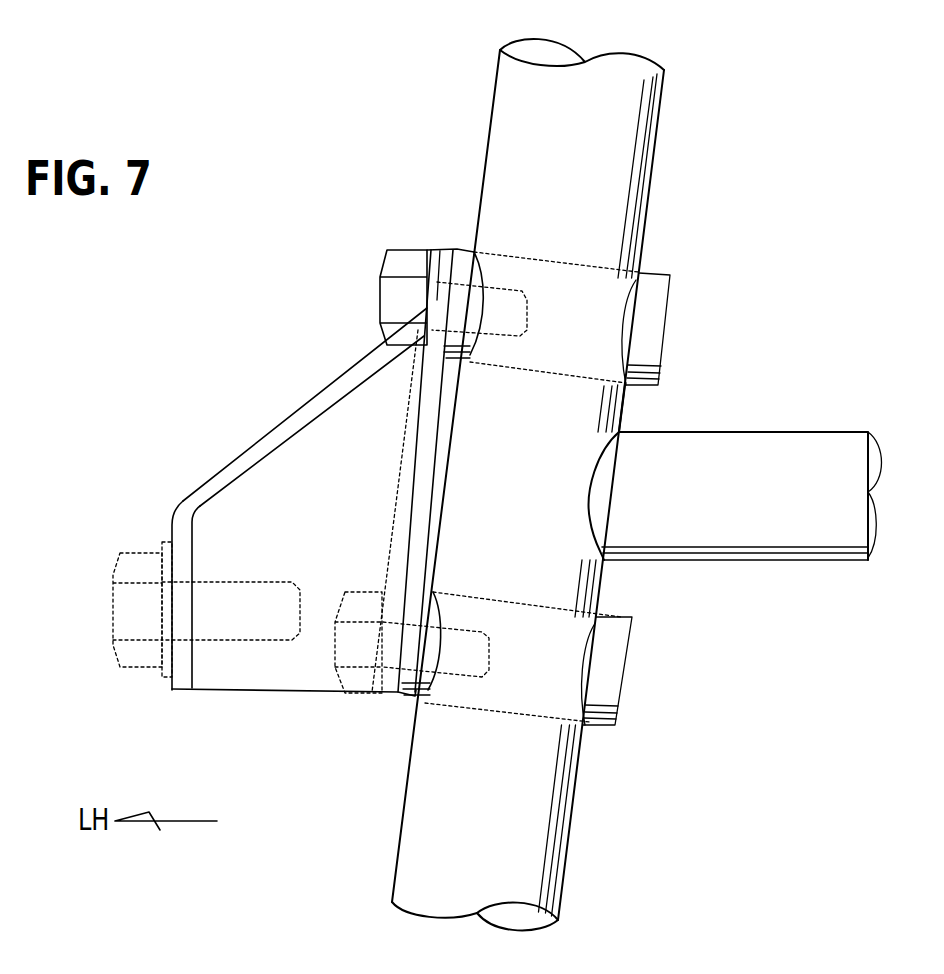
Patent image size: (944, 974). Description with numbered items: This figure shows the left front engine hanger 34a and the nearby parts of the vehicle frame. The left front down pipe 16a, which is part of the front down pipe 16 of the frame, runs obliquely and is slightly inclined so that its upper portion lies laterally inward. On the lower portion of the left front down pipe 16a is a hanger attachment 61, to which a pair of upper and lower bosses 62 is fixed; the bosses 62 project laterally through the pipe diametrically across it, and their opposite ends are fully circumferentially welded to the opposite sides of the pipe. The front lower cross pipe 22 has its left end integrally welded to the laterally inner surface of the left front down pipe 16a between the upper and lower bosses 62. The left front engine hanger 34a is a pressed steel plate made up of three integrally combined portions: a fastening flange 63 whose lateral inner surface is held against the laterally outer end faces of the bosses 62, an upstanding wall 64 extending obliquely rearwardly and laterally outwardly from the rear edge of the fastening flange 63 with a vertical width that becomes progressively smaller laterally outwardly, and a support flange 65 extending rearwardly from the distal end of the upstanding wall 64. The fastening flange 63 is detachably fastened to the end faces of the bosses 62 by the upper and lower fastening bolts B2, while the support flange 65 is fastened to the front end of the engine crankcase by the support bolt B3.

The front down pipe 16 is at (483, 147).
The left front down pipe 16a is at (505, 108).
The front lower cross pipe 22 is at (793, 533).
The left front engine hanger 34a is at (282, 452).
The hanger attachment 61 is at (592, 413).
The bosses 62 is at (653, 328).
The fastening flange 63 is at (443, 262).
The upstanding wall 64 is at (295, 415).
The support flange 65 is at (178, 668).
The fastening bolts B2 is at (395, 262).
The support bolt B3 is at (132, 564).